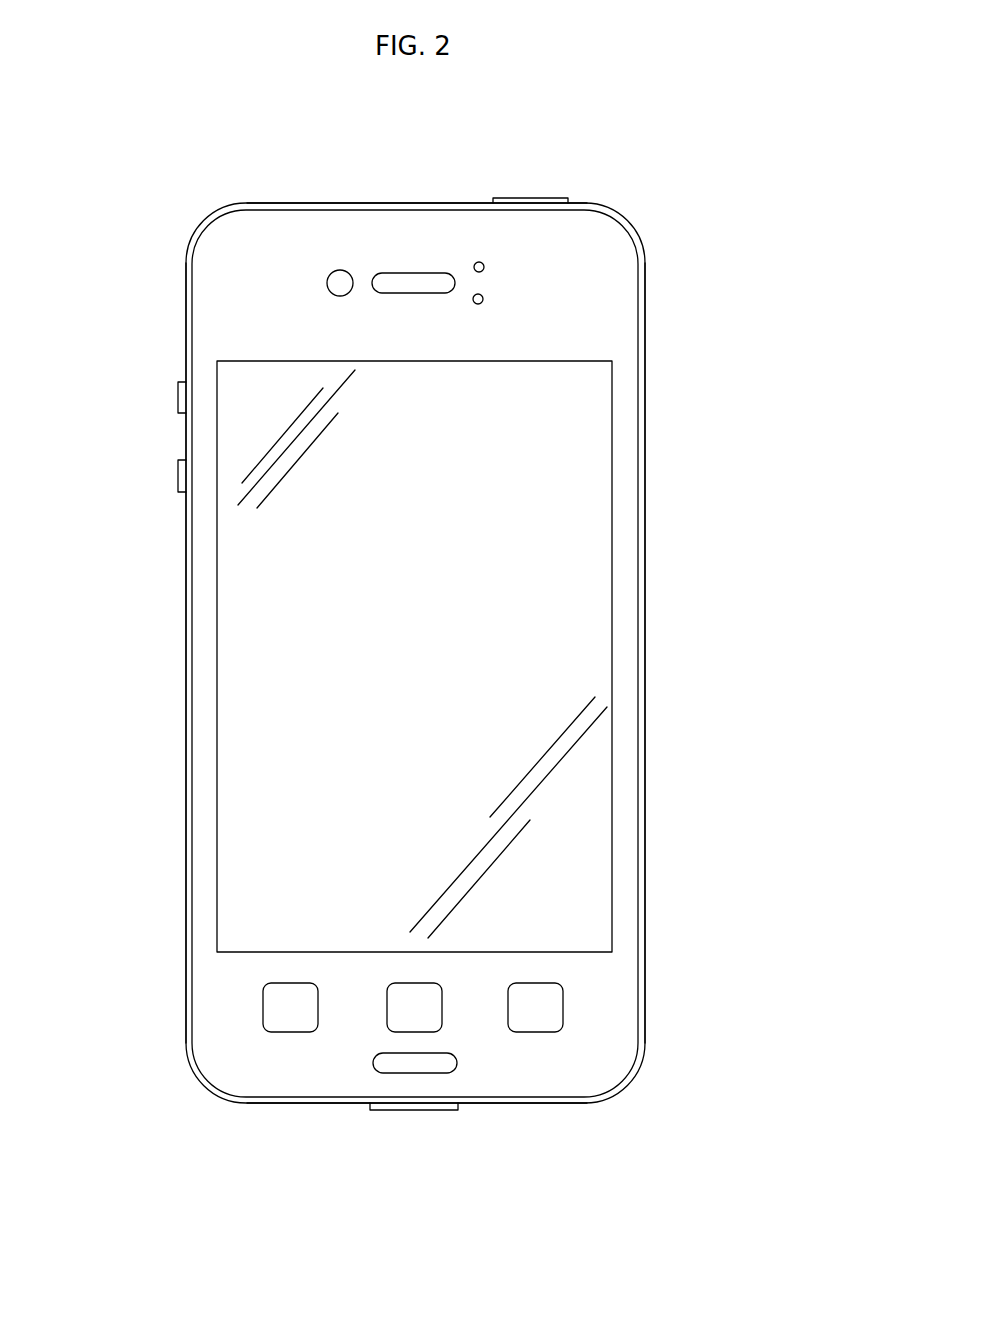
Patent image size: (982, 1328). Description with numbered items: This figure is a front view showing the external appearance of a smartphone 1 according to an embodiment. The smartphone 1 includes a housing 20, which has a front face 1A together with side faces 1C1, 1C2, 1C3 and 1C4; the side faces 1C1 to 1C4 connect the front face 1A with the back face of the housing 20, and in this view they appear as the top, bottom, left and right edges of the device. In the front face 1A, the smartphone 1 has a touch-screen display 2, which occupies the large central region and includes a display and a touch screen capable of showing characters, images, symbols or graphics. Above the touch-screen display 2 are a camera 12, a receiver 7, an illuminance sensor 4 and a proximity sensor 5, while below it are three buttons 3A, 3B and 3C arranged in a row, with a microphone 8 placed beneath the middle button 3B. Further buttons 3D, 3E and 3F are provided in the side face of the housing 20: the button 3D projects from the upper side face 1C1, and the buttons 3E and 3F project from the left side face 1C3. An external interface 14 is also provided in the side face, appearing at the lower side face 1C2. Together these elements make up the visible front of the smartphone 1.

The smartphone 1 is at (414, 666).
The front face 1A is at (263, 270).
The side face 1C1 is at (378, 203).
The side face 1C2 is at (502, 1110).
The side face 1C3 is at (186, 683).
The side face 1C4 is at (645, 405).
The touch-screen display 2 is at (595, 507).
The button 3A is at (290, 1018).
The button 3B is at (403, 1018).
The button 3C is at (527, 1020).
The button 3D is at (532, 198).
The button 3E is at (178, 394).
The button 3F is at (178, 474).
The illuminance sensor 4 is at (480, 263).
The proximity sensor 5 is at (484, 300).
The receiver 7 is at (413, 282).
The microphone 8 is at (443, 1063).
The camera 12 is at (340, 282).
The external interface 14 is at (385, 1112).
The housing 20 is at (186, 320).